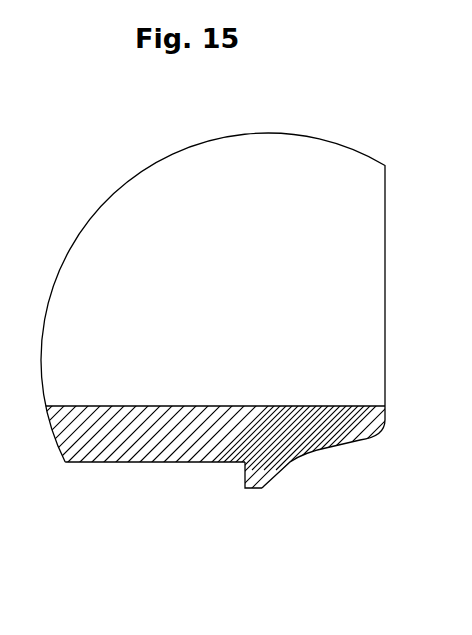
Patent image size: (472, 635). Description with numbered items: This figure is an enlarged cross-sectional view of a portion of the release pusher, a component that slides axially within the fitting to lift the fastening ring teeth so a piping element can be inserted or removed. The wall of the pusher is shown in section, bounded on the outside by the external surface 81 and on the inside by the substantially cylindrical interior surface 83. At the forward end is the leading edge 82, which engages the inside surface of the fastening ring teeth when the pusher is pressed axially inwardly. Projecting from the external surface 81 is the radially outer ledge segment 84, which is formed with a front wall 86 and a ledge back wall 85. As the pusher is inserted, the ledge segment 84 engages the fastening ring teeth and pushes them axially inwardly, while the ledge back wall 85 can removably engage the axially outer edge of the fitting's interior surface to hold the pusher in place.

The external surface 81 is at (75, 466).
The leading edge 82 is at (392, 412).
The substantially cylindrical interior surface 83 is at (116, 402).
The radially outer ledge segment 84 is at (355, 498).
The ledge back wall 85 is at (239, 475).
The front wall 86 is at (265, 483).